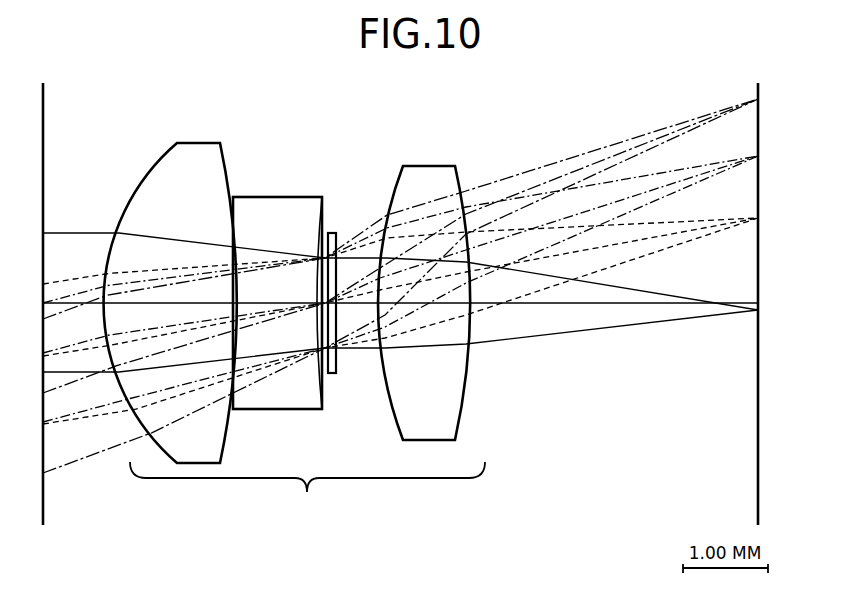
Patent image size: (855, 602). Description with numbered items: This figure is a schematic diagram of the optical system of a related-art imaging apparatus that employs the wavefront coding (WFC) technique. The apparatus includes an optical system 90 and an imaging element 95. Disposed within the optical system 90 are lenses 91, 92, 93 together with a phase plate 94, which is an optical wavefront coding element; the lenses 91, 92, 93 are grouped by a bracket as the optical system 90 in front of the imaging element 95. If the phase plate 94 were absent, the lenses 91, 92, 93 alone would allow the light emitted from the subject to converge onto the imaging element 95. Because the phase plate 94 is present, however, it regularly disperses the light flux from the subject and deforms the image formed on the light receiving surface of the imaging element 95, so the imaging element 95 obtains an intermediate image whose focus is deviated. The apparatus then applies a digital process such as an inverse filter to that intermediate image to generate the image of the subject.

The optical system 90 is at (307, 492).
The lens 91 is at (197, 143).
The lens 92 is at (278, 197).
The lens 93 is at (425, 166).
The phase plate 94 is at (332, 233).
The imaging element 95 is at (760, 123).